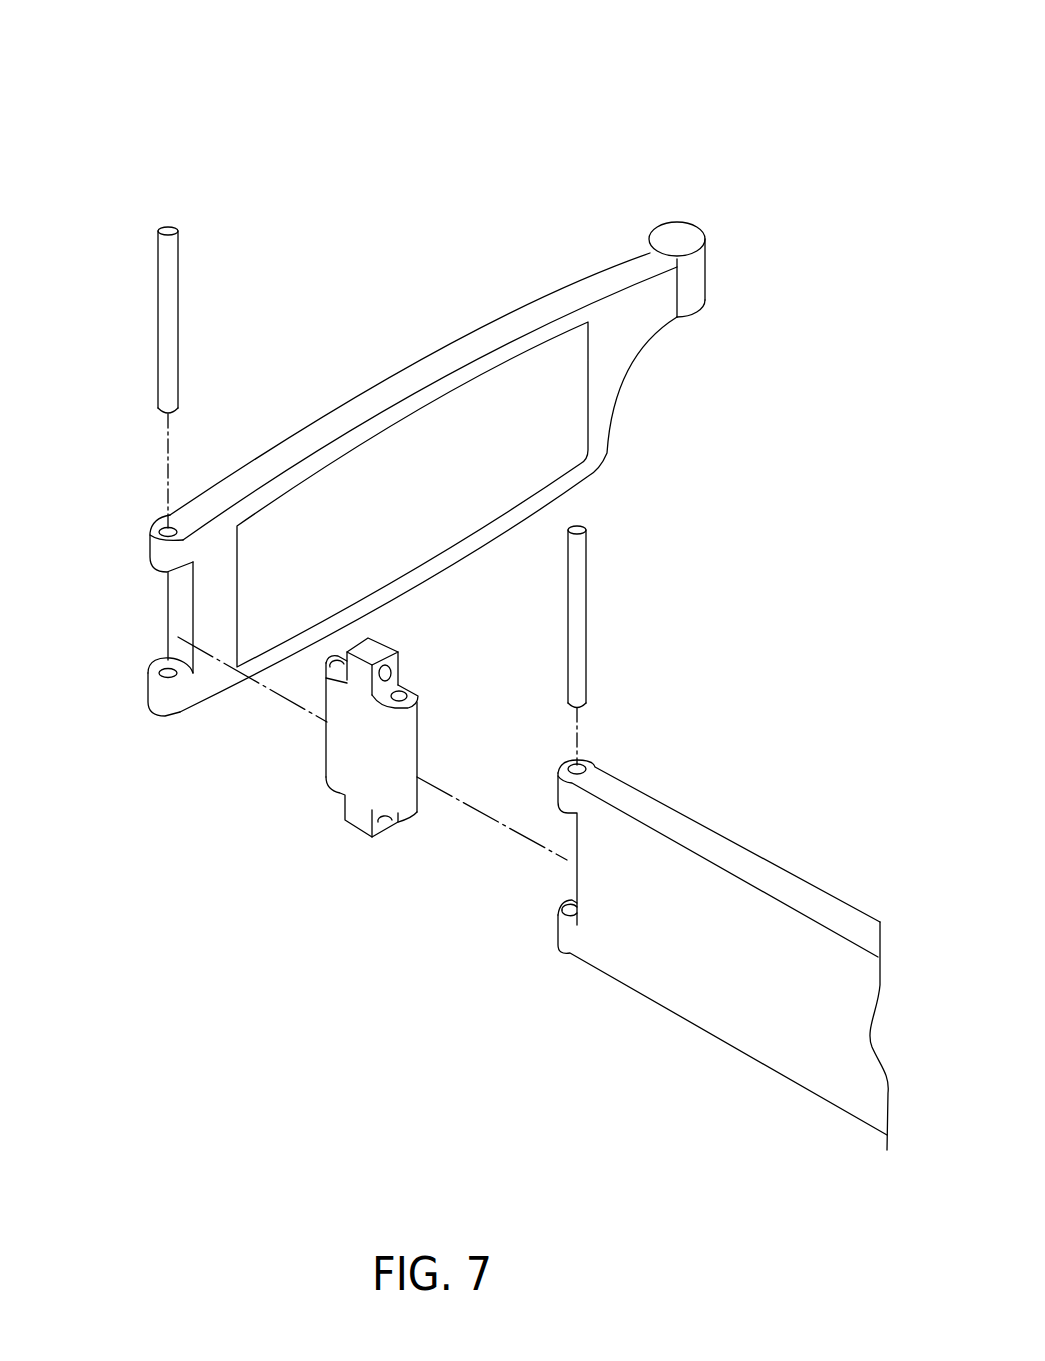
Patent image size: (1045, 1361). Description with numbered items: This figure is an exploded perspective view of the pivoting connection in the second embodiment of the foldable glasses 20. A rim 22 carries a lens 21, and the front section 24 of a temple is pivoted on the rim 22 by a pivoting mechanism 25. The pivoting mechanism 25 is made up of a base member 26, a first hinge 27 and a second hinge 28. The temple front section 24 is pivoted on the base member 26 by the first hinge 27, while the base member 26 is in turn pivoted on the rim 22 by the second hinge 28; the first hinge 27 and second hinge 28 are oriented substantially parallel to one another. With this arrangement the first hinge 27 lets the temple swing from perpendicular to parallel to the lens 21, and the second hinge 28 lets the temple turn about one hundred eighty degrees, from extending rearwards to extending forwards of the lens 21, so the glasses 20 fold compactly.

The foldable glasses 20 is at (363, 140).
The lens 21 is at (520, 450).
The rim 22 is at (392, 380).
The front section of temple 24 is at (745, 858).
The pivoting mechanism 25 is at (302, 893).
The base member 26 is at (345, 750).
The first hinge 27 is at (590, 637).
The second hinge 28 is at (166, 310).